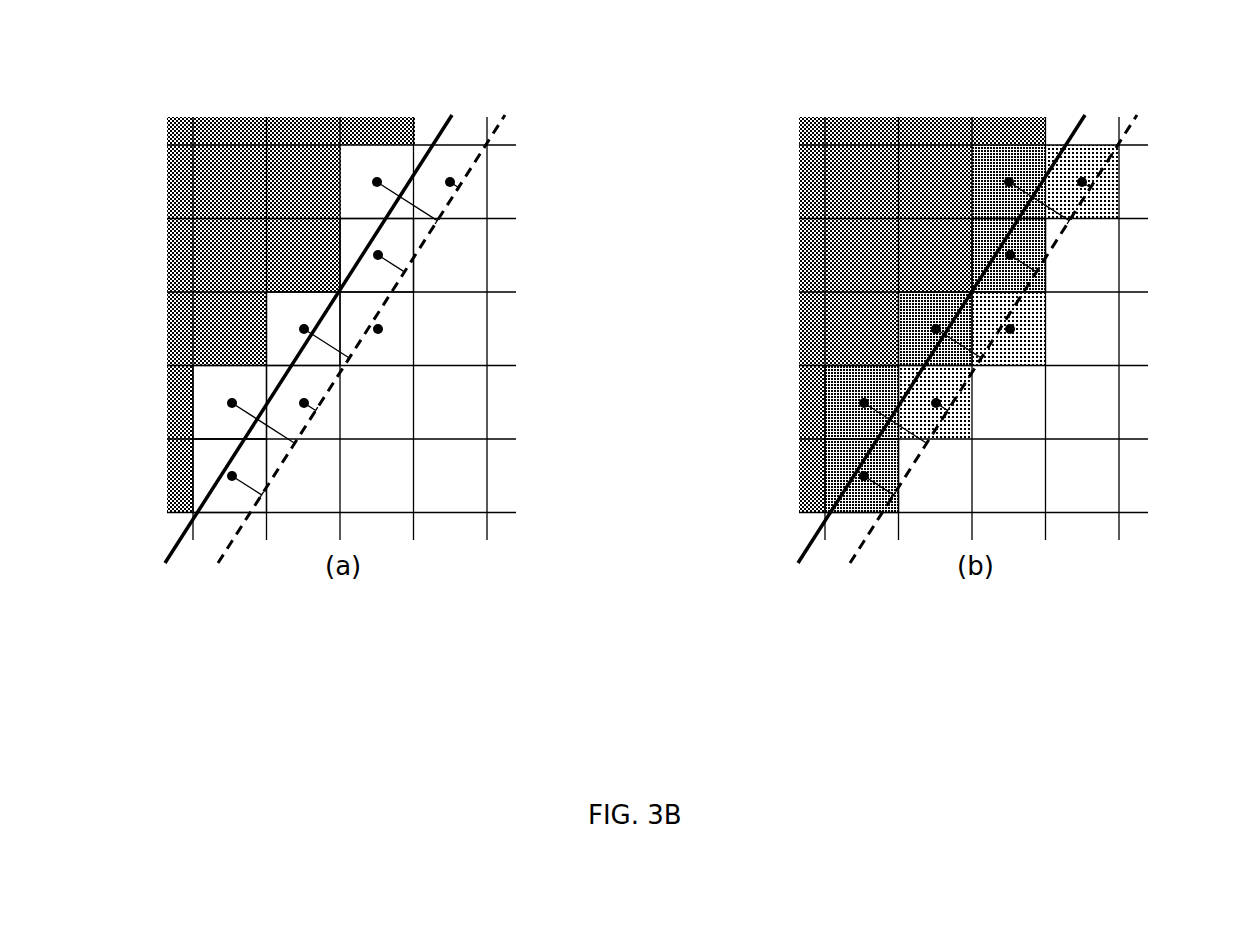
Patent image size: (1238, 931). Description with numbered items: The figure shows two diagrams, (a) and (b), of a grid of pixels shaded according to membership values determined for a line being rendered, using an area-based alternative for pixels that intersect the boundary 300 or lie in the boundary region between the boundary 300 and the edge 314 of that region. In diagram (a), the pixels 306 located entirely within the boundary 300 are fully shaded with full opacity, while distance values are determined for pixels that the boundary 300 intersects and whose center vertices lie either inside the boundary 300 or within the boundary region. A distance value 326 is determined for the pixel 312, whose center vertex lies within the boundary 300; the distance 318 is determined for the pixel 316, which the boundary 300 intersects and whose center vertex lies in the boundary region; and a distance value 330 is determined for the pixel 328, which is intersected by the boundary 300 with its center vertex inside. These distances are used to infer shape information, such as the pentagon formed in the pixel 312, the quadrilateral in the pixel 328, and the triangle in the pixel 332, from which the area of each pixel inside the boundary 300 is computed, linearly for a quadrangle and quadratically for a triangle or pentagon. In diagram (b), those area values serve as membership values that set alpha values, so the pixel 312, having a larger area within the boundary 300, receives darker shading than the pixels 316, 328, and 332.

The boundary 300 is at (451, 127).
The pixels 306 is at (161, 168).
The pixel 312 is at (212, 385).
The edge 314 is at (452, 208).
The pixel 316 is at (211, 459).
The distance 318 is at (249, 492).
The distance value 326 is at (238, 416).
The pixel 328 is at (286, 302).
The distance value 330 is at (328, 352).
The pixel 332 is at (358, 236).